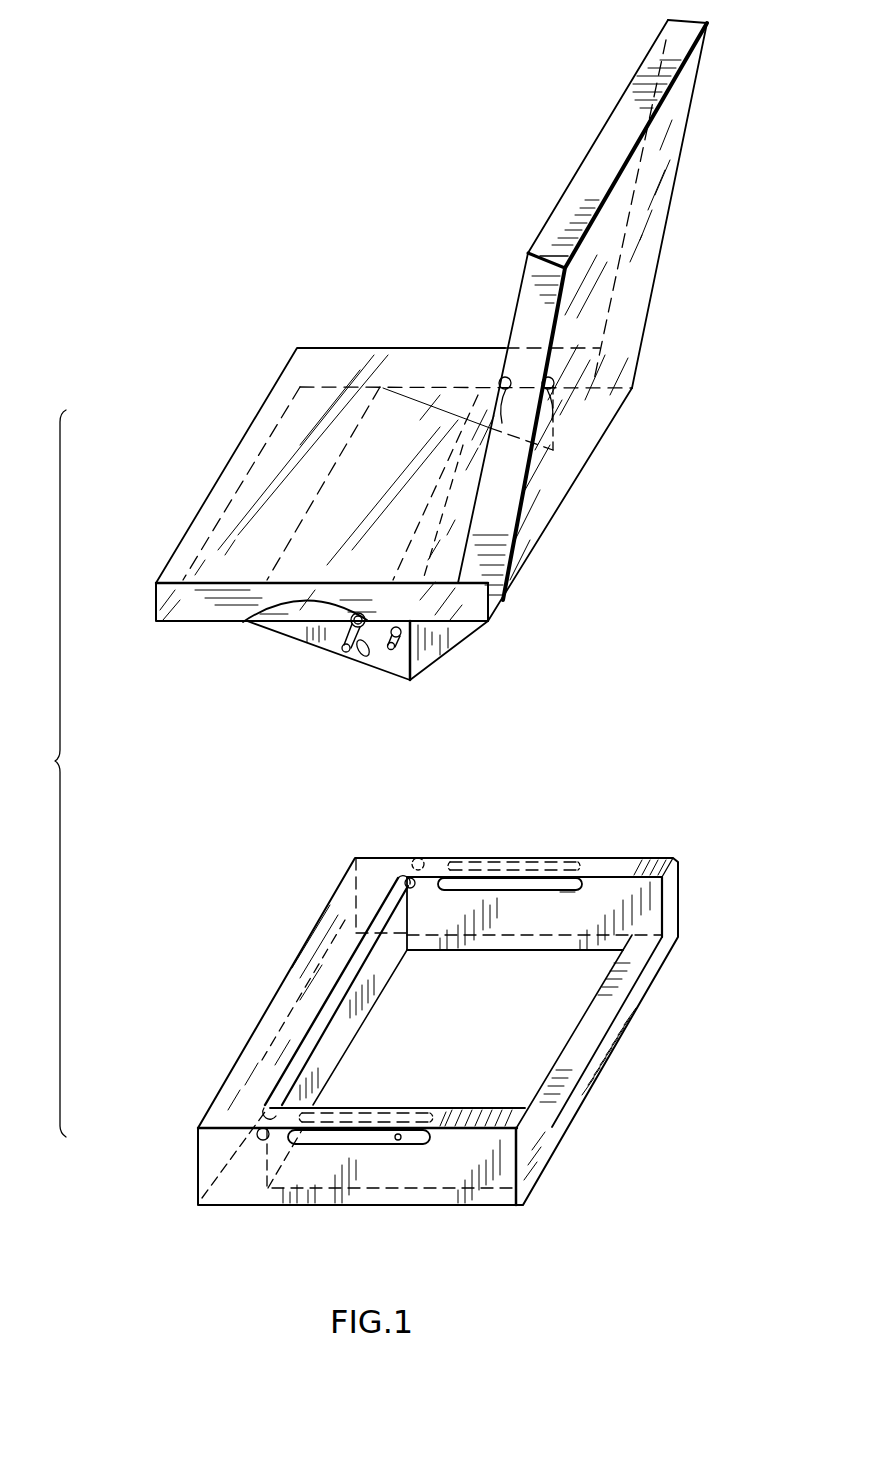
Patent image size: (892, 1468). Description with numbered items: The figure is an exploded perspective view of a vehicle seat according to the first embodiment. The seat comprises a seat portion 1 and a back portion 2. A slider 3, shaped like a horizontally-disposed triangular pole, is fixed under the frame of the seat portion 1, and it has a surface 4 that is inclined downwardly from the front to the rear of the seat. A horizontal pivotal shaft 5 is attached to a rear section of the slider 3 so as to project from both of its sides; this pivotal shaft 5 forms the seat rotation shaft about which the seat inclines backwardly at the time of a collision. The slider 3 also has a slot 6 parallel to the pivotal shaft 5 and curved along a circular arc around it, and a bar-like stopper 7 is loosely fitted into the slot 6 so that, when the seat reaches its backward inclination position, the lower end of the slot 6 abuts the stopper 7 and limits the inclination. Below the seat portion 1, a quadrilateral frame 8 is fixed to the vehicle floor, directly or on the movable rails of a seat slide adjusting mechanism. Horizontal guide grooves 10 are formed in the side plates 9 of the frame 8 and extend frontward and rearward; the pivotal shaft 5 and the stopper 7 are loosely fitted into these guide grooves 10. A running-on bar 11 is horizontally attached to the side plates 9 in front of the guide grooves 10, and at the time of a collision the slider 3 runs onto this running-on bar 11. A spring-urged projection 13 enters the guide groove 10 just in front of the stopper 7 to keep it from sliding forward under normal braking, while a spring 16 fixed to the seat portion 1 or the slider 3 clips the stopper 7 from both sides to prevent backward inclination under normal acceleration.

The seat portion 1 is at (162, 614).
The back portion 2 is at (655, 222).
The slider 3 is at (293, 632).
The surface 4 is at (313, 650).
The pivotal shaft 5 is at (394, 650).
The slot 6 is at (367, 657).
The stopper 7 is at (343, 658).
The frame 8 is at (692, 832).
The side plates 9 is at (567, 917).
The guide grooves 10 is at (473, 887).
The running-on bar 11 is at (327, 1028).
The projection 13 is at (400, 1142).
The spring 16 is at (243, 623).